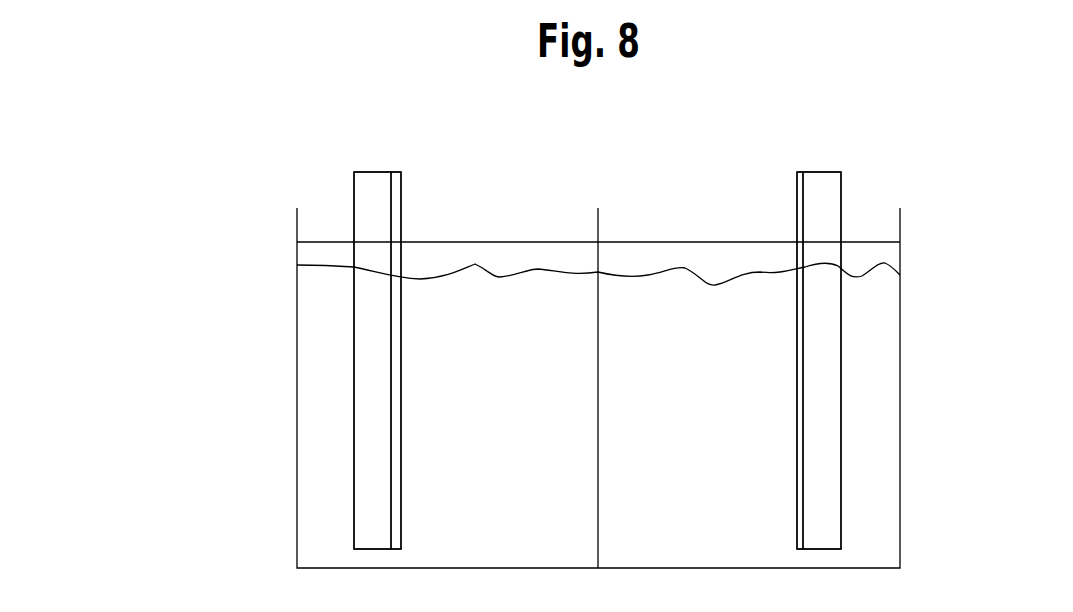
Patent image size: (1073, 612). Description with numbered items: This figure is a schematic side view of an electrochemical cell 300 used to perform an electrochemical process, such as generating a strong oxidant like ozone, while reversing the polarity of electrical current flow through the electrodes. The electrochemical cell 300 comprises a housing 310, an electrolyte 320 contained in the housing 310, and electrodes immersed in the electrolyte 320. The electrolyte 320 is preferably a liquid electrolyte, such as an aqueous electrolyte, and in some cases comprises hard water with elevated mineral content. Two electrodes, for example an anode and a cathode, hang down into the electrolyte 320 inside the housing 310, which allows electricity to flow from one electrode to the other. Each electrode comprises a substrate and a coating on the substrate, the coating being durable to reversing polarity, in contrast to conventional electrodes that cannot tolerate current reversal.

The electrochemical cell 300 is at (217, 158).
The housing 310 is at (900, 382).
The electrolyte 320 is at (648, 272).